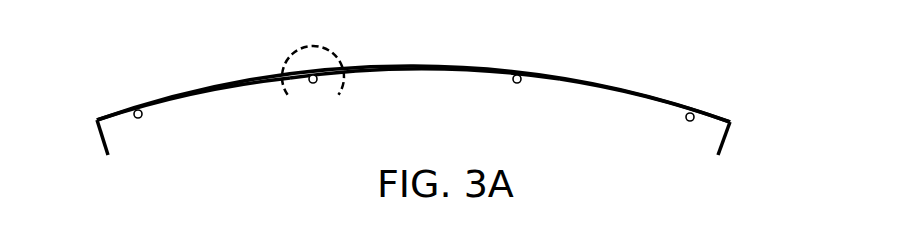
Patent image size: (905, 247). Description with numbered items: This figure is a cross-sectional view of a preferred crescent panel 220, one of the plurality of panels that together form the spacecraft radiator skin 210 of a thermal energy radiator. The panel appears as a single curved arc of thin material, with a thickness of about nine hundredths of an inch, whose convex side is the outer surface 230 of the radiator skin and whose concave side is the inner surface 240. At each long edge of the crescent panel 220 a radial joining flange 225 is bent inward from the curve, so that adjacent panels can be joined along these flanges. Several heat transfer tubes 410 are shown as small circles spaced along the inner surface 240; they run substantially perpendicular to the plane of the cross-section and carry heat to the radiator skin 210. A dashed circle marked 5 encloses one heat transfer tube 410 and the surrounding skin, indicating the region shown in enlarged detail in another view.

The crescent panel 220 is at (158, 87).
The outer surface 230 is at (187, 92).
The spacecraft radiator skin 210 is at (463, 68).
The inner surface 240 is at (596, 89).
The radial joining flange 225 is at (102, 140).
The heat transfer tube 410 is at (143, 118).
The detail region of FIG. 5 is at (290, 53).